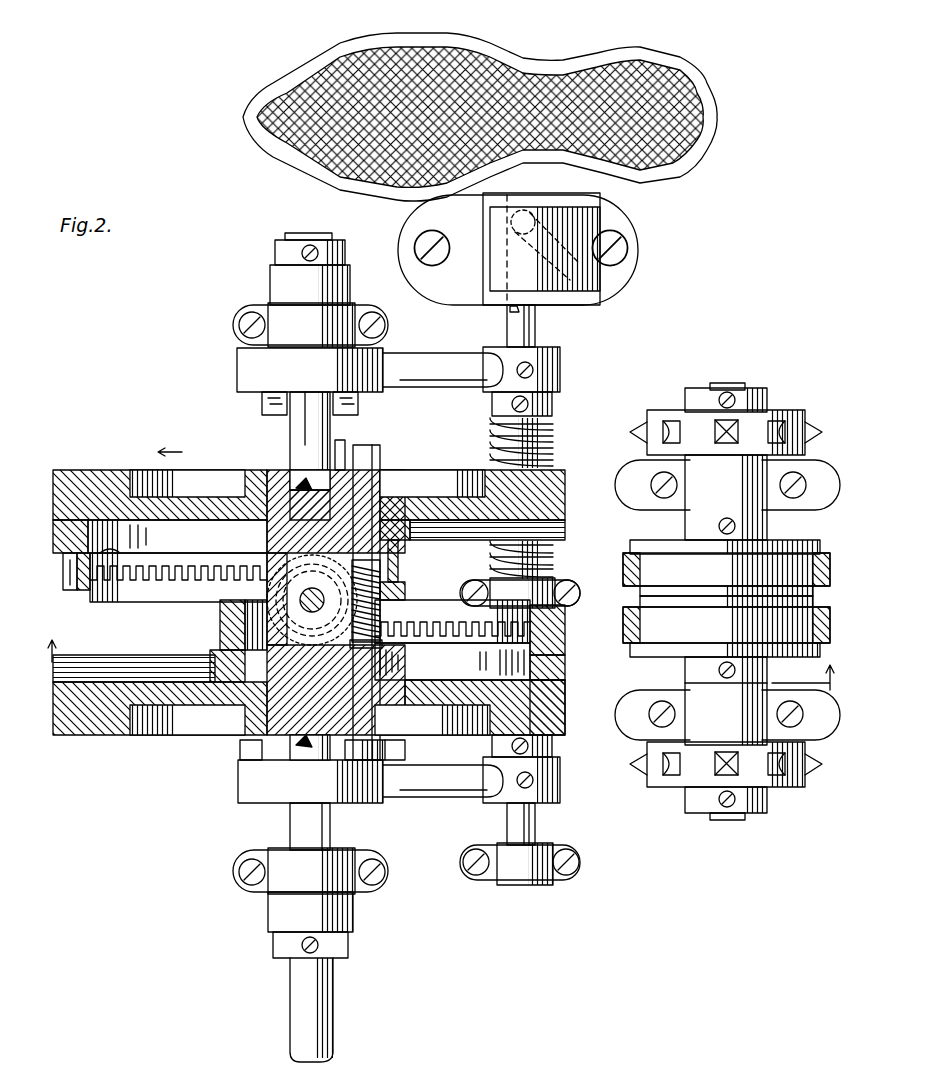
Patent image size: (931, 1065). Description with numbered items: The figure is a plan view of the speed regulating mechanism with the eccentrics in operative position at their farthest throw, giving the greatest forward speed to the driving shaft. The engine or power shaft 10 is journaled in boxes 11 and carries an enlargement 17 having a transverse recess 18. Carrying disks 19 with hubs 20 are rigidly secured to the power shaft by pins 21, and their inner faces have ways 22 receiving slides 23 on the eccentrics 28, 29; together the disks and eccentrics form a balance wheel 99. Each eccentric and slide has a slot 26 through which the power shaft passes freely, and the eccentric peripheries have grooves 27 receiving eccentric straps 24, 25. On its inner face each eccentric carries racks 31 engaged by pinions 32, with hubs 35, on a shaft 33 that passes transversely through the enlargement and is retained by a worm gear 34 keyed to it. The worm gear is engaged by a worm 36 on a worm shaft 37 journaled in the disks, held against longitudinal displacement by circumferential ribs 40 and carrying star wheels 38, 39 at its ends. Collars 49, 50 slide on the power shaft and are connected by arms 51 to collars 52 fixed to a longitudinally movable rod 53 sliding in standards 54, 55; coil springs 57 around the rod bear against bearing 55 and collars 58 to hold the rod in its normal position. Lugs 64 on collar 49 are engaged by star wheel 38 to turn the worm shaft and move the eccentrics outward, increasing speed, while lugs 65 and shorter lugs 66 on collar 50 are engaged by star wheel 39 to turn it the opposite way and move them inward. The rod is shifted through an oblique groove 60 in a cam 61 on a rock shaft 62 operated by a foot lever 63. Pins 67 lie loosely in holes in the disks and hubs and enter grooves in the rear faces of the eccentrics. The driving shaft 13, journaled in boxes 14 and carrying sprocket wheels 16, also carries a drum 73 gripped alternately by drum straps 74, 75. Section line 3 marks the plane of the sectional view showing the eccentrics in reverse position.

The section line 3 is at (443, 666).
The power shaft 10 is at (296, 826).
The boxes 11 is at (318, 332).
The driving shaft 13 is at (735, 384).
The boxes 14 is at (727, 600).
The sprocket wheels 16 is at (690, 418).
The enlargement 17 is at (300, 505).
The transverse recess 18 is at (268, 562).
The carrying disks 19 is at (110, 482).
The hubs 20 is at (292, 488).
The pins 21 is at (304, 480).
The ways 22 is at (560, 530).
The slides 23 is at (66, 558).
The eccentric strap 24 is at (220, 628).
The eccentric strap 25 is at (66, 578).
The slot 26 is at (309, 600).
The grooves 27 is at (74, 592).
The eccentric 28 is at (212, 655).
The eccentric 29 is at (400, 543).
The racks 31 is at (140, 585).
The pinions 32 is at (313, 608).
The shaft 33 is at (312, 600).
The worm gear 34 is at (265, 565).
The hubs 35 is at (382, 605).
The worm 36 is at (366, 601).
The worm shaft 37 is at (370, 652).
The star wheel 38 is at (352, 750).
The star wheel 39 is at (372, 455).
The circumferential ribs 40 is at (395, 512).
The collar 49 is at (310, 781).
The collar 50 is at (310, 370).
The arms 51 is at (438, 355).
The collars 52 is at (548, 372).
The rod 53 is at (537, 333).
The standard 54 is at (512, 870).
The standard 55 is at (545, 580).
The coil springs 57 is at (553, 442).
The collars 58 is at (553, 404).
The oblique groove 60 is at (598, 228).
The cam 61 is at (595, 262).
The rock shaft 62 is at (512, 310).
The operating lever 63 is at (520, 62).
The lugs 64 is at (248, 750).
The lugs 65 is at (268, 406).
The shorter lugs 66 is at (310, 400).
The pins 67 is at (340, 445).
The drum 73 is at (800, 545).
The drum strap 74 is at (832, 626).
The drum strap 75 is at (832, 575).
The balance wheel 99 is at (153, 590).